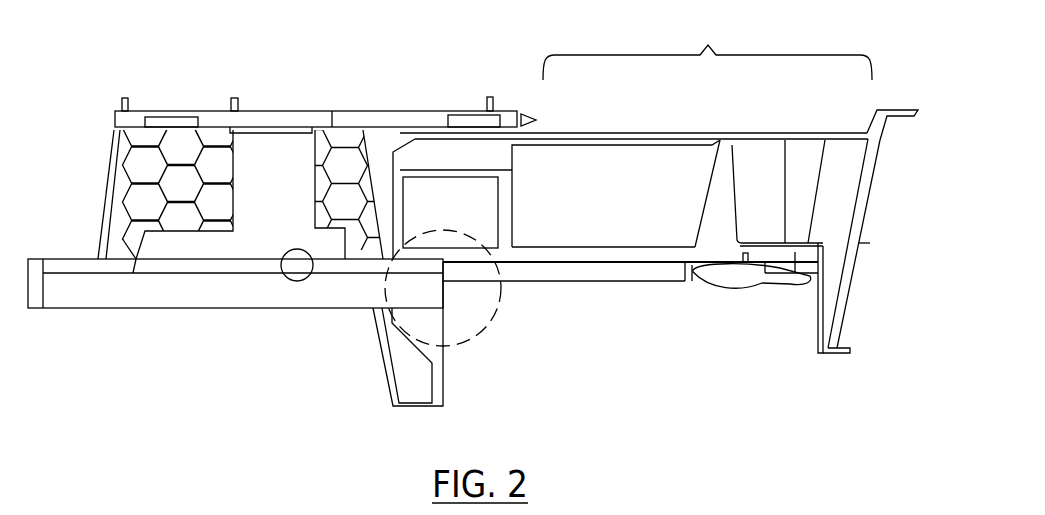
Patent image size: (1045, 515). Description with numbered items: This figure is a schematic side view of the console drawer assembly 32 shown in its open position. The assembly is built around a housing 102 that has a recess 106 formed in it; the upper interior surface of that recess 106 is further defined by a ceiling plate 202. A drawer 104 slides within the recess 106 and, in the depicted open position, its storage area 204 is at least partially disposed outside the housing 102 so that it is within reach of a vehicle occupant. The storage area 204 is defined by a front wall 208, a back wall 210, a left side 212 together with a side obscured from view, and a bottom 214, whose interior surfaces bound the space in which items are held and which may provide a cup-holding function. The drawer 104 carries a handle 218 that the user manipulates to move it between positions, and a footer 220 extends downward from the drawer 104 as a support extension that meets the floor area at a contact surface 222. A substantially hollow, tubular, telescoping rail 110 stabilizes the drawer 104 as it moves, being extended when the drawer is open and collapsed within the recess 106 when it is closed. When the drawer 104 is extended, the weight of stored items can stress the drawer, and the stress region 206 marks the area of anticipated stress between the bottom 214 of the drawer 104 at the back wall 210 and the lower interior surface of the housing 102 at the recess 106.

The console drawer assembly 32 is at (96, 186).
The ceiling plate 202 is at (285, 111).
The housing 102 is at (210, 245).
The recess 106 is at (382, 143).
The back wall 210 is at (403, 213).
The telescoping rail 110 is at (235, 277).
The stress region 206 is at (470, 308).
The storage area 204 is at (707, 46).
The drawer 104 is at (618, 162).
The left side 212 is at (613, 223).
The bottom 214 is at (690, 270).
The handle 218 is at (887, 122).
The front wall 208 is at (868, 193).
The footer 220 is at (832, 320).
The contact surface 222 is at (832, 355).